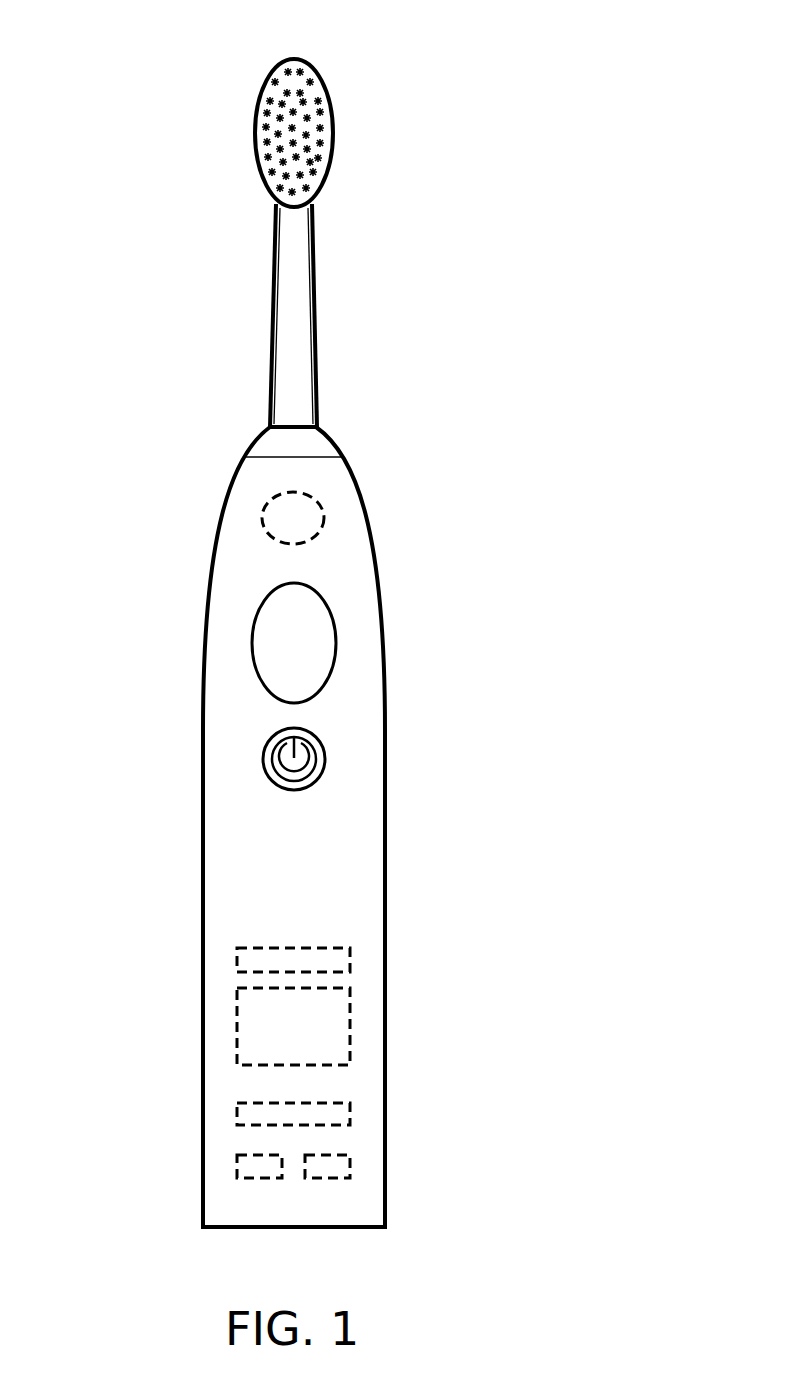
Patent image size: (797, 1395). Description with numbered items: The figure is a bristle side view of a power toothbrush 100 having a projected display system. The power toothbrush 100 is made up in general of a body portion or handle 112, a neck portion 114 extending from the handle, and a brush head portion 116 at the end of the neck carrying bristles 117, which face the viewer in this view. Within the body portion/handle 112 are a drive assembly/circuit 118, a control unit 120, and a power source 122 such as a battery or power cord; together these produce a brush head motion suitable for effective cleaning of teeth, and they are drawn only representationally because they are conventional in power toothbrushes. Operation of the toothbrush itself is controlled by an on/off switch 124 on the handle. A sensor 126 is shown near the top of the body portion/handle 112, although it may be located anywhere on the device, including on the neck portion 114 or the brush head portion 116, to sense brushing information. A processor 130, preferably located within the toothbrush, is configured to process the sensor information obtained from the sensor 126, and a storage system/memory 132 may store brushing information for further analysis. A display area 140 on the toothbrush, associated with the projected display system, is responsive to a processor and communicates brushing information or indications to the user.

The power toothbrush 100 is at (108, 86).
The body portion/handle 112 is at (158, 623).
The neck portion 114 is at (258, 319).
The brush head portion 116 is at (262, 150).
The bristles 117 is at (327, 134).
The drive assembly/circuit 118 is at (342, 1114).
The control unit 120 is at (243, 1166).
The power source 122 is at (342, 1164).
The on/off switch 124 is at (264, 758).
The sensor 126 is at (325, 521).
The processor 130 is at (243, 1031).
The storage system/memory 132 is at (342, 961).
The display area 140 is at (336, 643).